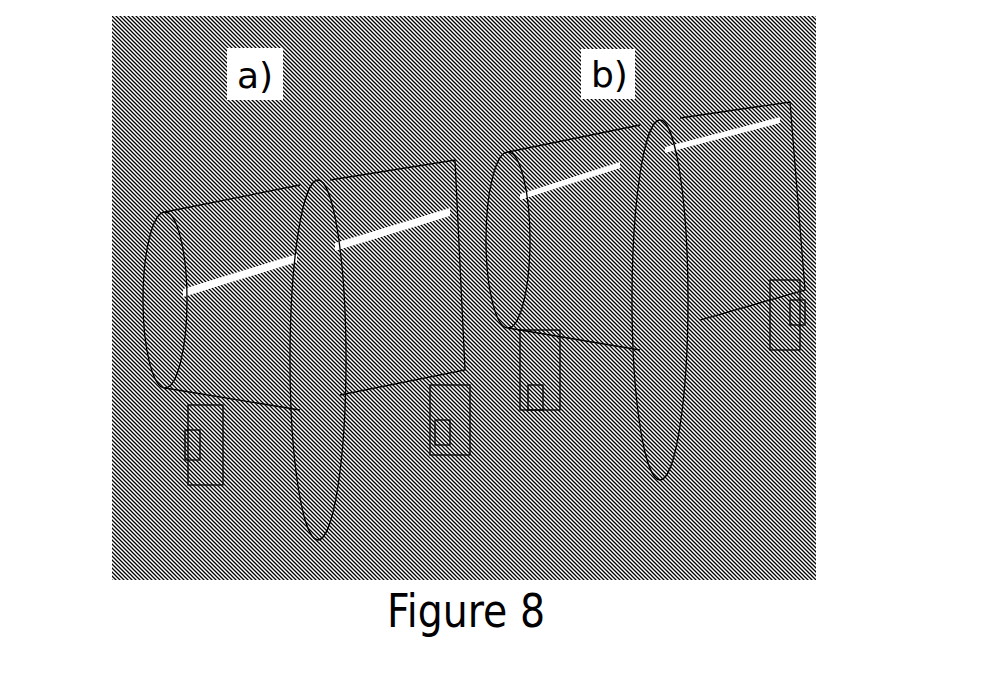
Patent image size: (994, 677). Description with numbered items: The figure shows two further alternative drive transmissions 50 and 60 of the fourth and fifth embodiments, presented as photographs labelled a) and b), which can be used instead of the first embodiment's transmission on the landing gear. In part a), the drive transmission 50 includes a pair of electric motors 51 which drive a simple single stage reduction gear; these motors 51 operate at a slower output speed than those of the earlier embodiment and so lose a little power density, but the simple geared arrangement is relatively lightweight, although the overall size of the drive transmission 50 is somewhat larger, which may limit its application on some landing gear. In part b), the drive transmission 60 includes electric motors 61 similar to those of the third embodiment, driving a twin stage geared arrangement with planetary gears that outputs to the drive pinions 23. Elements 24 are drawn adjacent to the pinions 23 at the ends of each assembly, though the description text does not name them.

The drive pinion 23 is at (195, 487).
The fastener 24 is at (187, 458).
The drive transmission 50 is at (233, 527).
The electric motor 51 is at (277, 317).
The drive transmission 60 is at (748, 453).
The electric motor 61 is at (765, 203).